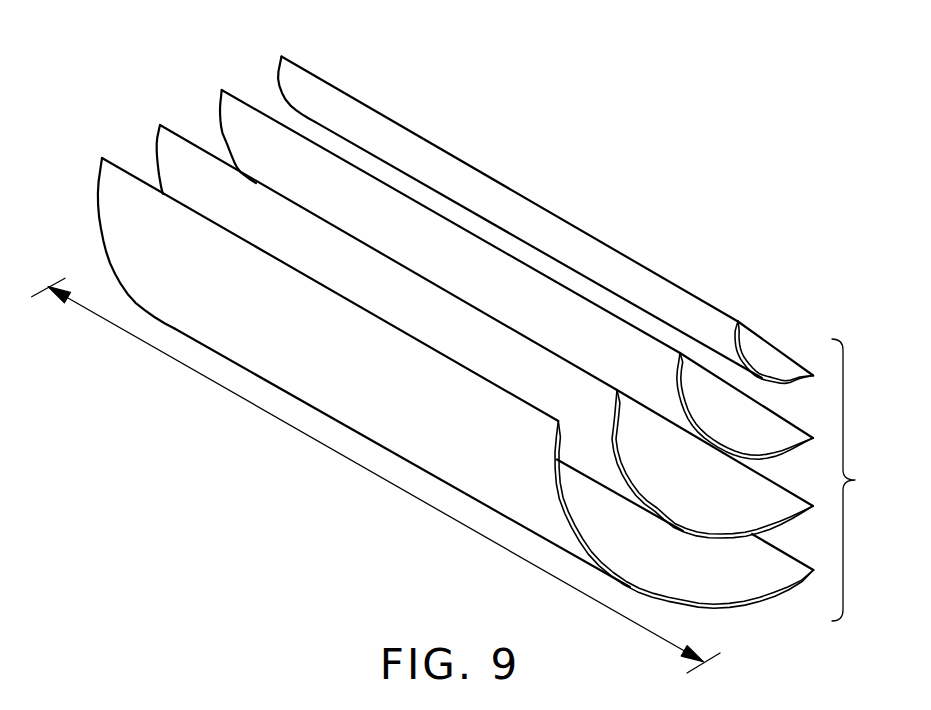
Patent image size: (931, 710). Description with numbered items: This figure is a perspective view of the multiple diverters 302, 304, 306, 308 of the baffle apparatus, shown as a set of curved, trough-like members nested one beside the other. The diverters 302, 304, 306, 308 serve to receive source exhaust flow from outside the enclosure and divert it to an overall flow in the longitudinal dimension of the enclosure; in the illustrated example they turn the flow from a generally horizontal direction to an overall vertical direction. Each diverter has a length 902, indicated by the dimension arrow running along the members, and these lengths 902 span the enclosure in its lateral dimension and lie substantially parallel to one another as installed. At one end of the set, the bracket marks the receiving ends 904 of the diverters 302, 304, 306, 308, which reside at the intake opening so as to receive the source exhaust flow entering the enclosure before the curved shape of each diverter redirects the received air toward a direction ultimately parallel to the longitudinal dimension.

The diverter 302 is at (298, 58).
The diverter 304 is at (242, 90).
The diverter 306 is at (180, 125).
The diverter 308 is at (120, 157).
The length 902 is at (373, 474).
The receiving end 904 is at (862, 480).